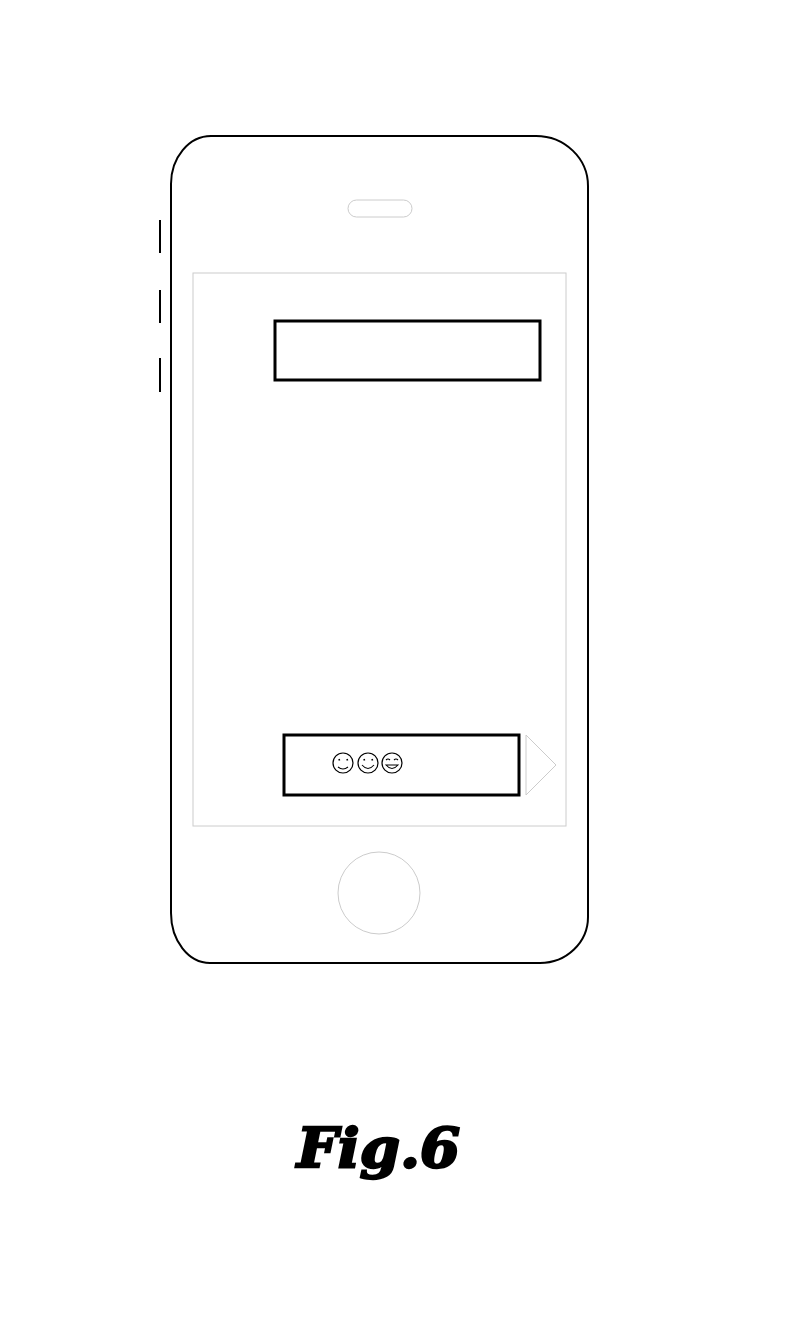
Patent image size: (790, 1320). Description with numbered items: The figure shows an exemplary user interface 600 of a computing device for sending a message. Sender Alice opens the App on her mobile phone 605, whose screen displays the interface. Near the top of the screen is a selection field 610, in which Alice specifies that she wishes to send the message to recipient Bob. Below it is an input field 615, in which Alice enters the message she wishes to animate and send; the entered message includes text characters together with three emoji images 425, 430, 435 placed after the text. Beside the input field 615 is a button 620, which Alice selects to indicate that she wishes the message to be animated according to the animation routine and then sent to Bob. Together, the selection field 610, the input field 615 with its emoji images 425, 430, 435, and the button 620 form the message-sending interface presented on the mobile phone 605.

The user interface screen 600 is at (366, 48).
The mobile phone 605 is at (589, 186).
The selection field 610 is at (540, 350).
The input field 615 is at (298, 735).
The button 620 is at (542, 782).
The emoji image 425 is at (337, 752).
The emoji image 430 is at (371, 752).
The emoji image 435 is at (393, 750).